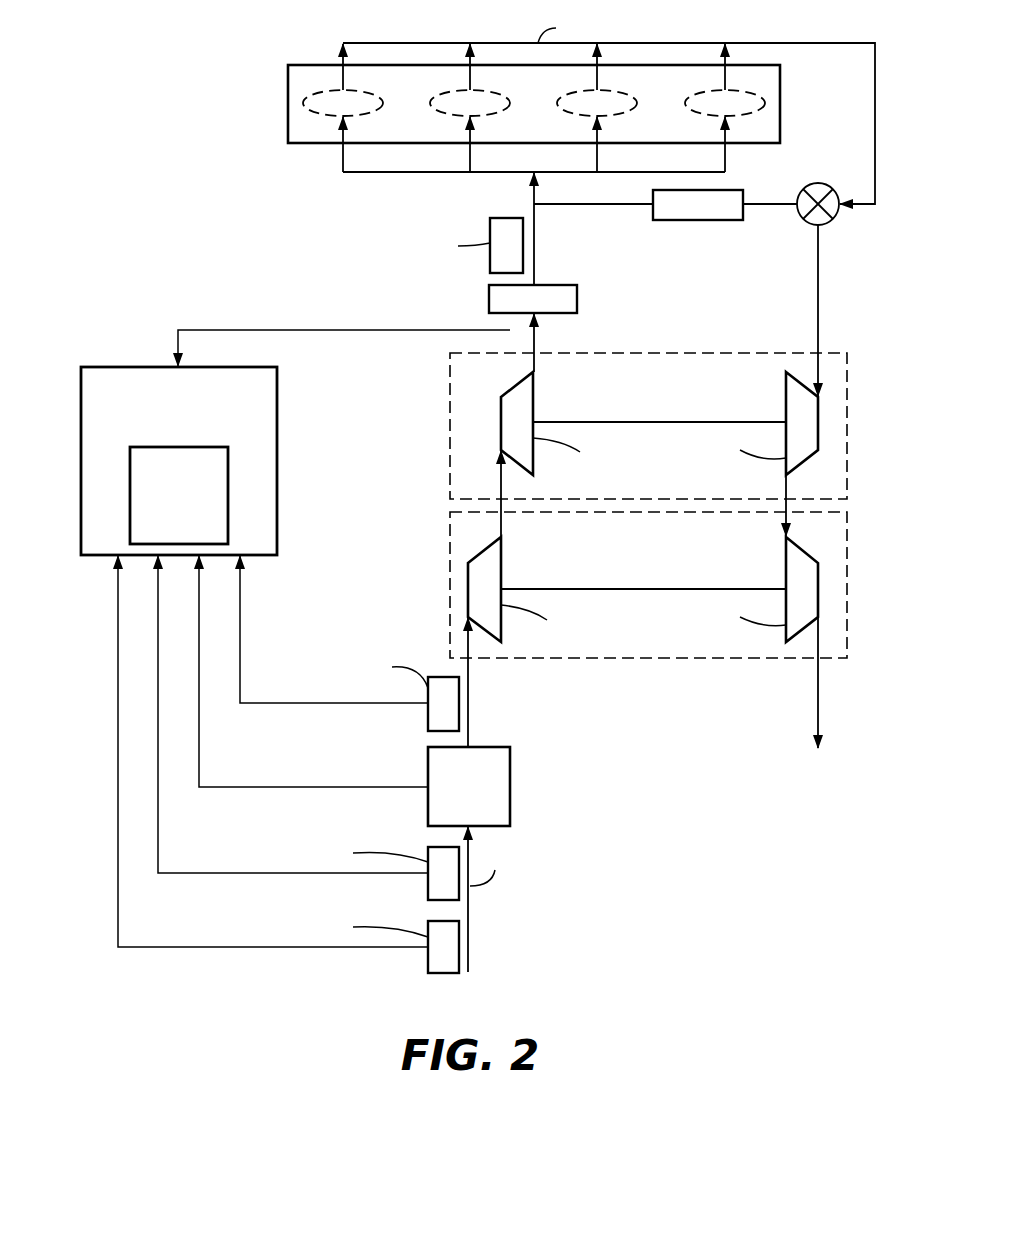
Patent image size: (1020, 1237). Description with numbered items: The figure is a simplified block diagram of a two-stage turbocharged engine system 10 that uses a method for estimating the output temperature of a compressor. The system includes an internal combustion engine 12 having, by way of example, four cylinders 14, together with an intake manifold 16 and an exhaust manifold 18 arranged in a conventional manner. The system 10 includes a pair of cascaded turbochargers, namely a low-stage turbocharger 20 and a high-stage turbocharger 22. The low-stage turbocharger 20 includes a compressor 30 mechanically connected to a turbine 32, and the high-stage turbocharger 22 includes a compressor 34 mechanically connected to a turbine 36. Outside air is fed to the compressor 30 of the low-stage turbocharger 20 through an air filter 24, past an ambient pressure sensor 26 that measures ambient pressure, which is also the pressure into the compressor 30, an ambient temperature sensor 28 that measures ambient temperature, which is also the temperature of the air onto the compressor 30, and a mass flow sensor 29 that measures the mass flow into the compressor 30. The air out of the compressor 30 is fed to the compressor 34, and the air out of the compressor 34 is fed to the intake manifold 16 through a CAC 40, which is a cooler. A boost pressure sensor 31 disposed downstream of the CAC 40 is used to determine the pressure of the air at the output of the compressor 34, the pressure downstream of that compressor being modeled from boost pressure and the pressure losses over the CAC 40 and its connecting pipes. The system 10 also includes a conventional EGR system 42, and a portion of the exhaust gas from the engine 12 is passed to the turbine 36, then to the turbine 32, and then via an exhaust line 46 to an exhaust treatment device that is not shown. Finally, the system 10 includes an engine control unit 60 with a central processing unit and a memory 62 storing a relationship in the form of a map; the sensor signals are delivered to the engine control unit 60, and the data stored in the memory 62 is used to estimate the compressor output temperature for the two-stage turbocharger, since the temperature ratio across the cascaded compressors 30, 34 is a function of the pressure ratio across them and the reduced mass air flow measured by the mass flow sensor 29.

The two-stage turbocharged engine system 10 is at (186, 237).
The internal combustion engine 12 is at (787, 43).
The cylinders 14 is at (534, 103).
The intake manifold 16 is at (369, 173).
The exhaust manifold 18 is at (406, 43).
The low-stage turbocharger 20 is at (648, 554).
The high-stage turbocharger 22 is at (648, 425).
The air filter 24 is at (510, 778).
The ambient pressure sensor 26 is at (335, 935).
The ambient temperature sensor 28 is at (428, 808).
The mass flow sensor 29 is at (364, 691).
The compressor 30 is at (484, 546).
The boost pressure sensor 31 is at (440, 246).
The turbine 32 is at (802, 589).
The compressor 34 is at (517, 394).
The turbine 36 is at (802, 454).
The CAC 40 is at (566, 285).
The EGR system 42 is at (695, 242).
The exhaust line 46 is at (818, 707).
The engine control unit 60 is at (277, 457).
The memory 62 is at (179, 495).